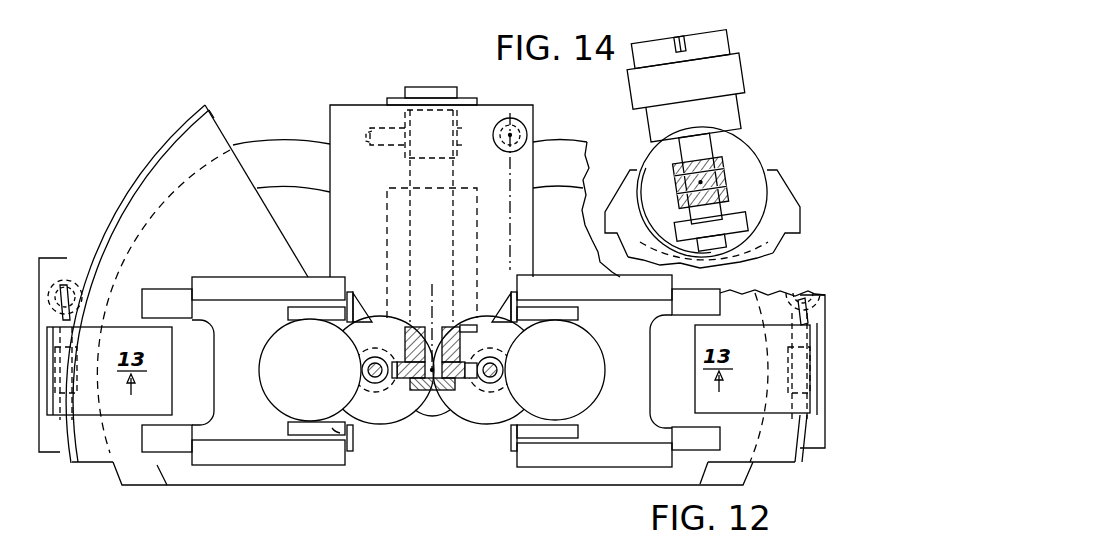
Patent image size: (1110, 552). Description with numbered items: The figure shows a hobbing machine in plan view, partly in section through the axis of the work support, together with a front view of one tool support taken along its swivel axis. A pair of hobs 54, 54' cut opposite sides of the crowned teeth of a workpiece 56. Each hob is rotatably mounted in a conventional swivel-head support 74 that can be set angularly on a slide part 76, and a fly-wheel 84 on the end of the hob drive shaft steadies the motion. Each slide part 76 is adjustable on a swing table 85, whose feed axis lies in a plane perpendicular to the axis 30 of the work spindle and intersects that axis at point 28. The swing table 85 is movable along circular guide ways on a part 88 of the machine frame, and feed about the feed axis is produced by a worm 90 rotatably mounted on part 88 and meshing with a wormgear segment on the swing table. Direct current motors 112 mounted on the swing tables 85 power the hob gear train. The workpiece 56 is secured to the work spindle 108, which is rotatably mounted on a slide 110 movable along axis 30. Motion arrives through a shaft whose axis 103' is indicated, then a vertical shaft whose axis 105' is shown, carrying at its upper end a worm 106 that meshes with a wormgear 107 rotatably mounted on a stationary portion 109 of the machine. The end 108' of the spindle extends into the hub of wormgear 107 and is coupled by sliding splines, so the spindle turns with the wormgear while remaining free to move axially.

In FIG. 12, the stationary portion 109 is at (343, 113).
In FIG. 12, the worm 106 is at (501, 110).
In FIG. 12, the axis of vertical shaft 105' is at (538, 185).
In FIG. 12, the wormgear 107 is at (388, 147).
In FIG. 12, the end of spindle 108' is at (458, 216).
In FIG. 12, the axis of shaft 103' is at (565, 209).
In FIG. 12, the slide 110 is at (390, 250).
In FIG. 12, the axis of work spindle 30 is at (432, 300).
In FIG. 12, the slide part 76 is at (294, 283).
In FIG. 14, the slide part 76 is at (773, 180).
In FIG. 12, the hob 54 is at (380, 370).
In FIG. 12, the hob 54' is at (478, 370).
In FIG. 12, the work spindle 108 is at (555, 370).
In FIG. 12, the fly-wheel 84 is at (278, 397).
In FIG. 12, the workpiece 56 is at (405, 386).
In FIG. 12, the intersection point 28 is at (443, 368).
In FIG. 12, the swivel-head support 74 is at (350, 436).
In FIG. 12, the direct current motor 112 is at (165, 392).
In FIG. 12, the worm 90 is at (70, 414).
In FIG. 12, the swing table 85 is at (98, 459).
In FIG. 14, the swing table 85 is at (762, 250).
In FIG. 12, the part of machine frame 88 is at (281, 477).